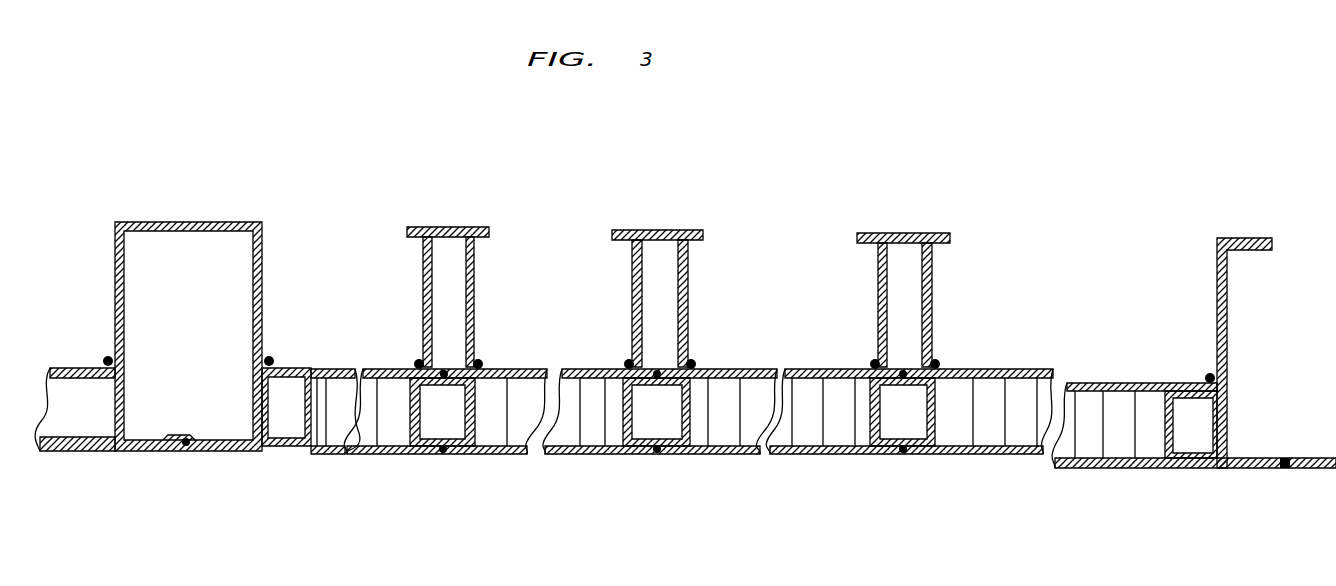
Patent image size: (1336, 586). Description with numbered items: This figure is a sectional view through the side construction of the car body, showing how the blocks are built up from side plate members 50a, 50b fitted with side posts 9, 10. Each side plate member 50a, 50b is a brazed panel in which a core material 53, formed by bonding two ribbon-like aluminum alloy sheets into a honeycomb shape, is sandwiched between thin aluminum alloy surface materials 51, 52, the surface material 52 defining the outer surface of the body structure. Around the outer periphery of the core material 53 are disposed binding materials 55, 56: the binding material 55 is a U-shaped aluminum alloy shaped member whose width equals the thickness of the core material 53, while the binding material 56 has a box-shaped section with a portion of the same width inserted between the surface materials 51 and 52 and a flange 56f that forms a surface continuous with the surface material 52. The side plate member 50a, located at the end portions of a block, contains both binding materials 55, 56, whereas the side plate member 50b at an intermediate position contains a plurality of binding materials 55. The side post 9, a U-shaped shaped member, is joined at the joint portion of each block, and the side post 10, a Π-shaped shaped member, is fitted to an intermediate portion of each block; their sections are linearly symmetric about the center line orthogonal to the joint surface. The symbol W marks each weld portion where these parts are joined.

The side post 9 is at (201, 223).
The side post 10 is at (455, 227).
The weld portion W is at (108, 360).
The side plate member 50a is at (685, 411).
The side plate member 50b is at (562, 407).
The surface material 51 is at (387, 369).
The surface material 52 is at (385, 455).
The core material 53 is at (326, 438).
The binding material 55 is at (430, 448).
The binding material 56 is at (258, 445).
The flange 56f is at (190, 452).